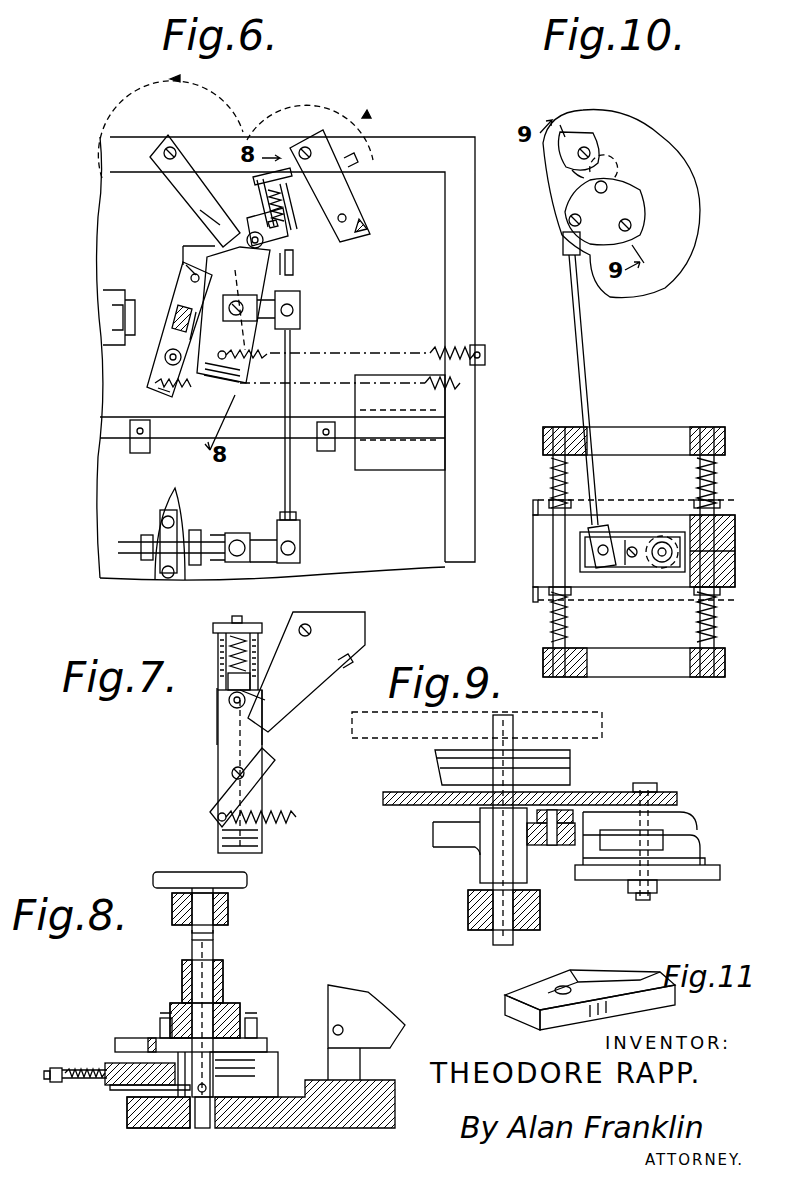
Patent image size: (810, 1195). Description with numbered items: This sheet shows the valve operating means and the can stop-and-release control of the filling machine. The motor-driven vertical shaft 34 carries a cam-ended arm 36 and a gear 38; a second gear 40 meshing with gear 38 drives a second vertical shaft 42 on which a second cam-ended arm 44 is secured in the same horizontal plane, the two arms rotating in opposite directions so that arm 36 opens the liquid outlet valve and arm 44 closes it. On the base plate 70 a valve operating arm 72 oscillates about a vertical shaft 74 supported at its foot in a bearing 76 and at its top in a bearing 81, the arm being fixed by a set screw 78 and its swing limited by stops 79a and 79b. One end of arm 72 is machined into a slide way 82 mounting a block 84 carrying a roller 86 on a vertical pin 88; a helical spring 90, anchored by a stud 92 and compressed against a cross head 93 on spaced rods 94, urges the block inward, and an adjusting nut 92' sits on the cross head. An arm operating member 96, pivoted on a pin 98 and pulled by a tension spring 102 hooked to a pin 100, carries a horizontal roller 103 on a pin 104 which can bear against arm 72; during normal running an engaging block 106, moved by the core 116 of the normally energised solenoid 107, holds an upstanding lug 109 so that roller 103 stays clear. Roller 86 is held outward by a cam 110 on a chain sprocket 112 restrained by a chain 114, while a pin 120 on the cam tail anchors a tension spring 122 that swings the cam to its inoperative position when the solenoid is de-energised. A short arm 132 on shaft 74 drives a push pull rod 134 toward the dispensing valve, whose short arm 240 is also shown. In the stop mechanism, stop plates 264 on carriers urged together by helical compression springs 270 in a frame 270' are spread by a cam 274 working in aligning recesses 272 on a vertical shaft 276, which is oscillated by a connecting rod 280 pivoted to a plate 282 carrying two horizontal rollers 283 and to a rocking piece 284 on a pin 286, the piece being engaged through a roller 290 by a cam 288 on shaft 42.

In FIG. 6, the vertical shaft 34 is at (168, 135).
In FIG. 6, the cam-ended arm 36 is at (200, 190).
In FIG. 6, the gear 38 is at (105, 119).
In FIG. 6, the second gear 40 is at (330, 92).
In FIG. 9, the second gear 40 is at (602, 732).
In FIG. 6, the second vertical shaft 42 is at (302, 146).
In FIG. 10, the second vertical shaft 42 is at (578, 158).
In FIG. 7, the second vertical shaft 42 is at (300, 630).
In FIG. 9, the second vertical shaft 42 is at (493, 729).
In FIG. 6, the second cam-ended arm 44 is at (345, 205).
In FIG. 7, the second cam-ended arm 44 is at (280, 705).
In FIG. 9, the second cam-ended arm 44 is at (570, 768).
In FIG. 6, the base plate 70 is at (423, 294).
In FIG. 10, the base plate 70 is at (700, 172).
In FIG. 8, the base plate 70 is at (295, 1125).
In FIG. 6, the valve operating arm 72 is at (290, 290).
In FIG. 7, the valve operating arm 72 is at (217, 730).
In FIG. 8, the valve operating arm 72 is at (270, 1055).
In FIG. 6, the vertical shaft 74 is at (248, 298).
In FIG. 7, the vertical shaft 74 is at (245, 775).
In FIG. 8, the vertical shaft 74 is at (213, 955).
In FIG. 8, the bearing 76 is at (203, 1127).
In FIG. 8, the set screw 78 is at (208, 1088).
In FIG. 6, the stop 79a is at (300, 258).
In FIG. 6, the stop 79b is at (183, 246).
In FIG. 8, the bearing 81 is at (247, 880).
In FIG. 7, the slide way 82 is at (262, 745).
In FIG. 8, the slide way 82 is at (185, 1080).
In FIG. 6, the block 84 is at (282, 220).
In FIG. 7, the block 84 is at (252, 690).
In FIG. 8, the block 84 is at (110, 1085).
In FIG. 11, the block 84 is at (502, 1002).
In FIG. 6, the roller 86 is at (247, 241).
In FIG. 7, the roller 86 is at (228, 705).
In FIG. 8, the roller 86 is at (125, 1040).
In FIG. 8, the vertical pin 88 is at (150, 1090).
In FIG. 6, the helical spring 90 is at (260, 192).
In FIG. 7, the helical spring 90 is at (258, 640).
In FIG. 8, the helical spring 90 is at (92, 1068).
In FIG. 7, the stud 92 is at (205, 665).
In FIG. 7, the adjusting nut 92' is at (217, 608).
In FIG. 6, the cross head 93 is at (256, 178).
In FIG. 7, the cross head 93 is at (213, 625).
In FIG. 8, the cross head 93 is at (56, 1068).
In FIG. 6, the spaced rods 94 is at (280, 230).
In FIG. 7, the spaced rods 94 is at (218, 648).
In FIG. 6, the arm operating member 96 is at (168, 360).
In FIG. 6, the pin 98 is at (188, 278).
In FIG. 6, the pin 100 is at (158, 385).
In FIG. 6, the helical tension spring 102 is at (198, 395).
In FIG. 6, the horizontal roller 103 is at (165, 361).
In FIG. 6, the pin 104 is at (165, 370).
In FIG. 6, the engaging block 106 is at (178, 312).
In FIG. 6, the solenoid 107 is at (100, 323).
In FIG. 6, the upstanding lug 109 is at (182, 290).
In FIG. 6, the cam 110 is at (250, 268).
In FIG. 7, the cam 110 is at (210, 800).
In FIG. 8, the cam 110 is at (290, 1030).
In FIG. 8, the chain sprocket 112 is at (182, 1010).
In FIG. 8, the chain 114 is at (257, 1013).
In FIG. 6, the solenoid core 116 is at (112, 330).
In FIG. 6, the upstanding pin 120 is at (235, 354).
In FIG. 6, the tension spring 122 is at (250, 372).
In FIG. 7, the tension spring 122 is at (293, 830).
In FIG. 6, the short arm 132 is at (302, 309).
In FIG. 8, the short arm 132 is at (228, 900).
In FIG. 6, the push pull rod 134 is at (285, 475).
In FIG. 6, the short arm 240 is at (268, 535).
In FIG. 10, the stop plates 264 is at (533, 598).
In FIG. 10, the helical compression springs 270 is at (634, 552).
In FIG. 10, the frame 270' is at (634, 543).
In FIG. 10, the aligning recesses 272 is at (585, 555).
In FIG. 10, the cam 274 is at (630, 535).
In FIG. 10, the vertical shaft 276 is at (640, 540).
In FIG. 10, the connecting rod 280 is at (582, 383).
In FIG. 9, the connecting rod 280 is at (672, 850).
In FIG. 10, the plate 282 is at (580, 562).
In FIG. 10, the horizontal rollers 283 is at (665, 575).
In FIG. 10, the rocking piece 284 is at (645, 212).
In FIG. 9, the rocking piece 284 is at (690, 838).
In FIG. 10, the pin 286 is at (632, 228).
In FIG. 9, the pin 286 is at (653, 897).
In FIG. 10, the cam 288 is at (600, 148).
In FIG. 9, the cam 288 is at (433, 835).
In FIG. 10, the roller 290 is at (615, 175).
In FIG. 9, the roller 290 is at (540, 850).